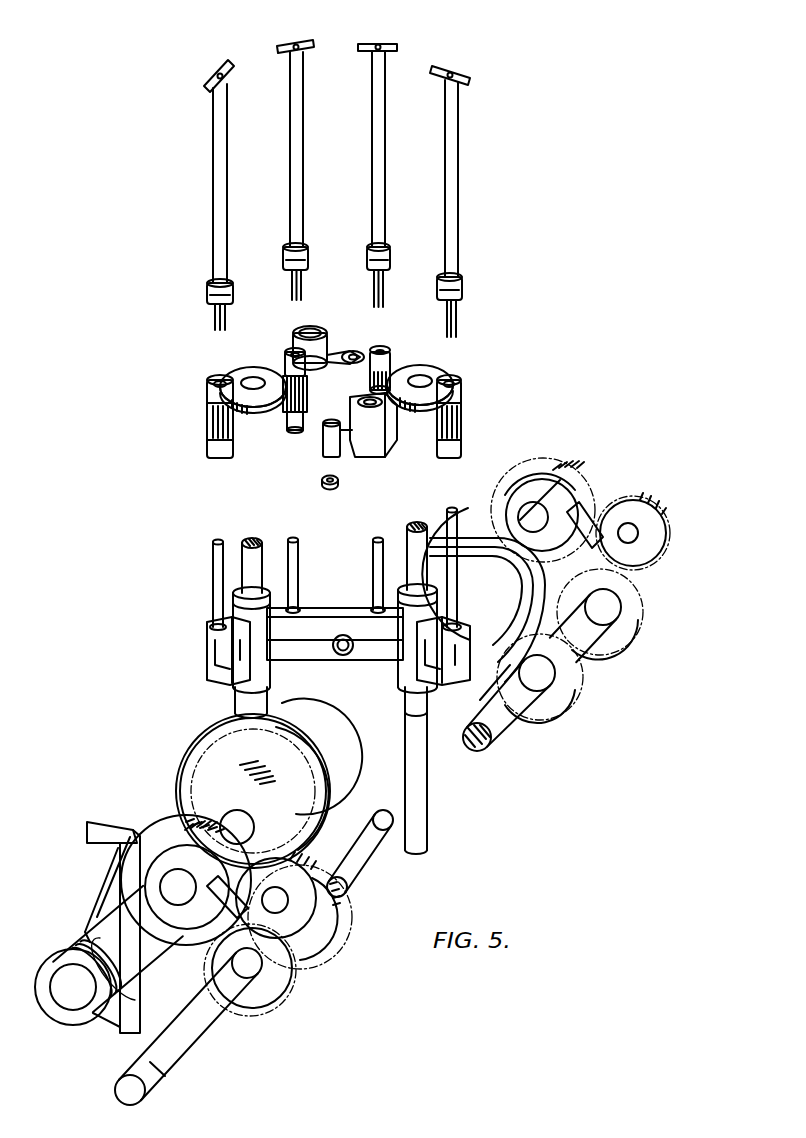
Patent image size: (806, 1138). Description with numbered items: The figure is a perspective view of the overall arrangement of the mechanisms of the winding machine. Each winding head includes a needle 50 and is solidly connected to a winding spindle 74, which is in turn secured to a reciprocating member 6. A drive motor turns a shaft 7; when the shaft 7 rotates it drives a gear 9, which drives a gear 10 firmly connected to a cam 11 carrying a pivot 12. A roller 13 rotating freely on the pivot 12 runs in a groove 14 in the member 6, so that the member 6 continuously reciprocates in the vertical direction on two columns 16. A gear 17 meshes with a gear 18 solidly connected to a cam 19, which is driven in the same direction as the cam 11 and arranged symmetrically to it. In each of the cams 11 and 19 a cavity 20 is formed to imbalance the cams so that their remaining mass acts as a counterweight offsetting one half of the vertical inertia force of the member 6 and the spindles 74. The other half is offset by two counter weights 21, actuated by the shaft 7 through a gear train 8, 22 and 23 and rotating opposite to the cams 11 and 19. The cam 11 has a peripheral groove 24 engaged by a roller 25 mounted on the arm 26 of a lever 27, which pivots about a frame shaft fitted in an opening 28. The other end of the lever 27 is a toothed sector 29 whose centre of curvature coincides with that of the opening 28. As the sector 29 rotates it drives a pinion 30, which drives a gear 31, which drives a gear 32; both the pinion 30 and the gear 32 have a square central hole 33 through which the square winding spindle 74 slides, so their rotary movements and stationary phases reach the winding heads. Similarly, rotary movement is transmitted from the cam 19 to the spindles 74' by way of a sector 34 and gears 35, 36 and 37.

The reciprocating member 6 is at (210, 672).
The shaft 7 is at (140, 1096).
The gear 8 is at (600, 650).
The gear 9 is at (342, 928).
The gear 10 is at (230, 787).
The cam 11 is at (355, 775).
The pivot 12 is at (300, 692).
The roller 13 is at (345, 656).
The groove 14 is at (300, 643).
The columns 16 is at (252, 555).
The gear 17 is at (537, 716).
The gear 18 is at (570, 520).
The cam 19 is at (508, 700).
The cavity 20 is at (470, 748).
The counter weights 21 is at (573, 567).
The gear 22 is at (655, 560).
The gear 23 is at (530, 480).
The peripheral groove 24 is at (335, 812).
The roller 25 is at (335, 486).
The arm 26 is at (330, 458).
The lever 27 is at (372, 450).
The opening 28 is at (386, 423).
The toothed sector 29 is at (330, 432).
The pinion 30 is at (392, 366).
The gear 31 is at (423, 370).
The gear 32 is at (461, 423).
The square central hole 33 is at (383, 348).
The sector 34 is at (316, 358).
The gear 35 is at (286, 408).
The gear 36 is at (252, 372).
The gear 37 is at (207, 435).
The needle 50 is at (437, 66).
The winding spindle 74 is at (391, 335).
The winding spindle 74' is at (230, 345).